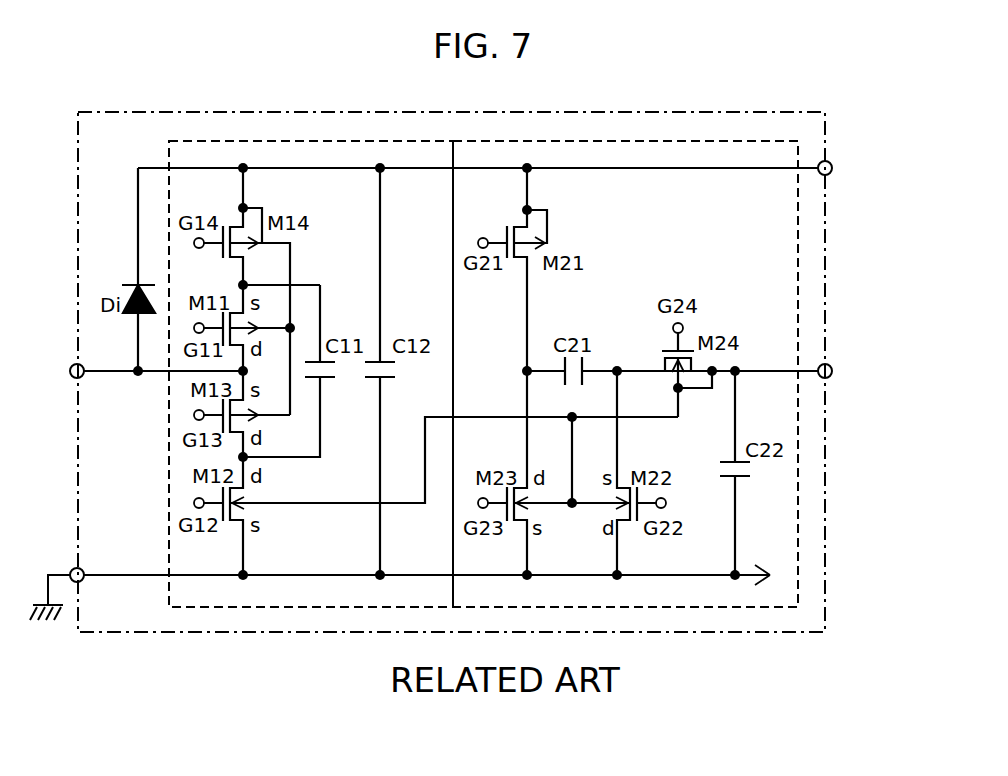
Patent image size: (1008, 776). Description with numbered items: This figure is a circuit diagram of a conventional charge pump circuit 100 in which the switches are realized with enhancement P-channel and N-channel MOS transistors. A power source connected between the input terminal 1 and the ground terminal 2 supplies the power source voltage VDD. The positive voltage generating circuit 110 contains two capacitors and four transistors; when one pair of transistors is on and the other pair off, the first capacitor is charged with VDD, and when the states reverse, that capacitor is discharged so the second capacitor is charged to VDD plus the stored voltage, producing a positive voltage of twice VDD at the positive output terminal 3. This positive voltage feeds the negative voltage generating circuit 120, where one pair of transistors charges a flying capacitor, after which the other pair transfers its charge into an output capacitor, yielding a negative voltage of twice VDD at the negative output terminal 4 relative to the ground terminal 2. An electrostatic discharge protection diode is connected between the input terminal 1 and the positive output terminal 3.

The input terminal 1 is at (70, 365).
The ground terminal 2 is at (70, 568).
The positive output terminal 3 is at (832, 163).
The negative output terminal 4 is at (832, 365).
The charge pump circuit 100 is at (780, 112).
The positive voltage generating circuit 110 is at (268, 141).
The negative voltage generating circuit 120 is at (615, 141).